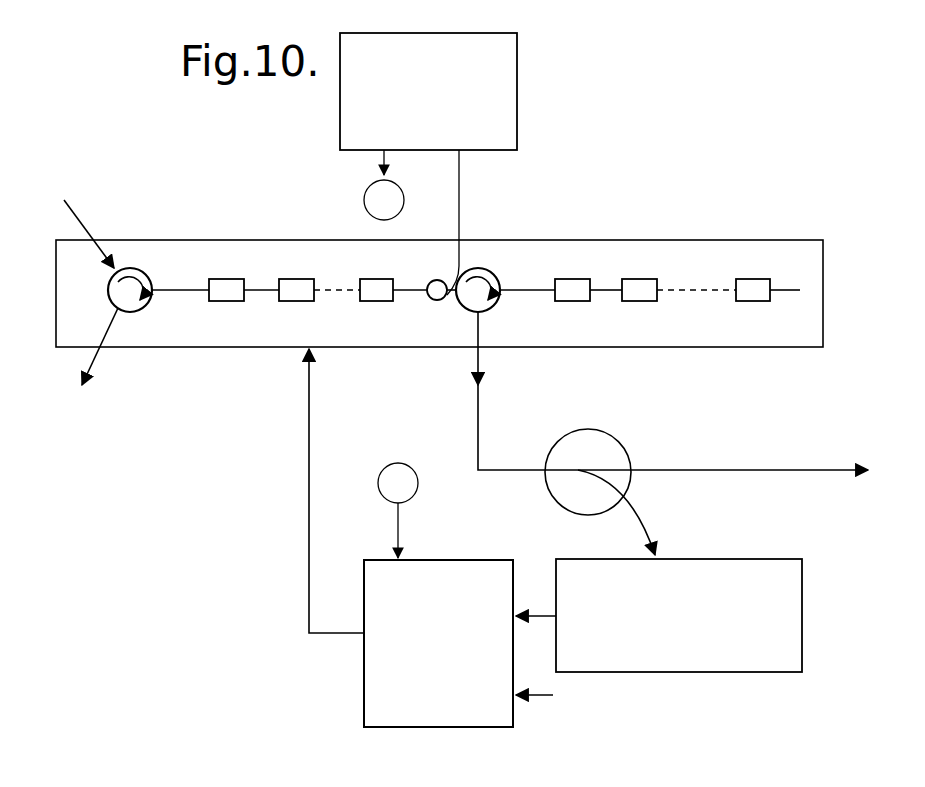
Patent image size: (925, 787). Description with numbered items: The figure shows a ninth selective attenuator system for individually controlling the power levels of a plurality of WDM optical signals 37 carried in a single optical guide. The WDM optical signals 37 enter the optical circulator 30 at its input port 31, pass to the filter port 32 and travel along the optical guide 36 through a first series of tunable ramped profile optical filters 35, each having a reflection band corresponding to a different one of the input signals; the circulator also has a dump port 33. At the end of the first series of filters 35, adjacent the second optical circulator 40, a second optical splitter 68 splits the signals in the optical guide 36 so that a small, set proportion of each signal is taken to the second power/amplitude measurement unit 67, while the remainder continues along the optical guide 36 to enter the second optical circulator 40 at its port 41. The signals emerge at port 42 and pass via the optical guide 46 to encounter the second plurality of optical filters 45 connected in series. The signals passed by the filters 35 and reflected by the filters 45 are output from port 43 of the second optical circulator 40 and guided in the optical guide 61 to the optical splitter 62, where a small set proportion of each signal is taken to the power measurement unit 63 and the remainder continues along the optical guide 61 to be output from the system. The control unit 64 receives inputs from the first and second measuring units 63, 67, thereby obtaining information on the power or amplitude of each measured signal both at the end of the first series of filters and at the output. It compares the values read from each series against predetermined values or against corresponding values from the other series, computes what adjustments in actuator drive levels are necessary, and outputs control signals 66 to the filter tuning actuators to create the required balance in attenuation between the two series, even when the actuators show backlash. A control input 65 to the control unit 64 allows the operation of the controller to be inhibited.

The optical circulator 30 is at (150, 262).
The input port 31 is at (113, 278).
The filter port 32 is at (156, 288).
The dump port 33 is at (126, 311).
The tunable ramped profile optical filters 35 is at (230, 279).
The optical guide 36 is at (406, 290).
The WDM optical signals 37 is at (75, 220).
The second optical circulator 40 is at (492, 264).
The port 41 is at (449, 298).
The port 42 is at (504, 288).
The port 43 is at (482, 310).
The second plurality of optical filters 45 is at (628, 279).
The optical guide 46 is at (790, 290).
The optical guide 61 is at (480, 426).
The optical splitter 62 is at (606, 464).
The power measurement unit 63 is at (696, 623).
The control unit 64 is at (453, 642).
The control input 65 is at (516, 700).
The control signals 66 is at (311, 437).
The second power/amplitude measurement unit 67 is at (445, 97).
The second optical splitter 68 is at (440, 281).